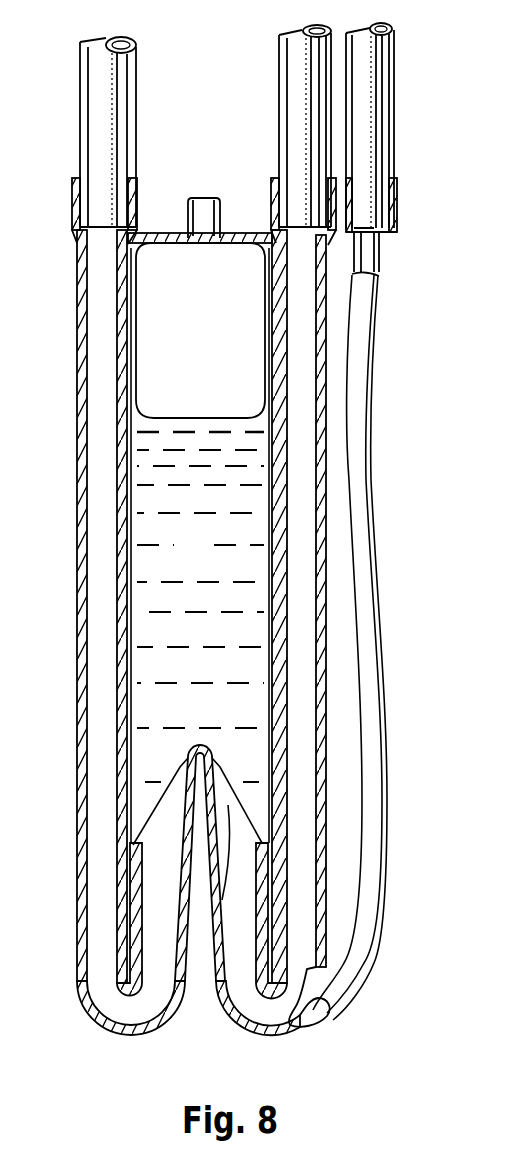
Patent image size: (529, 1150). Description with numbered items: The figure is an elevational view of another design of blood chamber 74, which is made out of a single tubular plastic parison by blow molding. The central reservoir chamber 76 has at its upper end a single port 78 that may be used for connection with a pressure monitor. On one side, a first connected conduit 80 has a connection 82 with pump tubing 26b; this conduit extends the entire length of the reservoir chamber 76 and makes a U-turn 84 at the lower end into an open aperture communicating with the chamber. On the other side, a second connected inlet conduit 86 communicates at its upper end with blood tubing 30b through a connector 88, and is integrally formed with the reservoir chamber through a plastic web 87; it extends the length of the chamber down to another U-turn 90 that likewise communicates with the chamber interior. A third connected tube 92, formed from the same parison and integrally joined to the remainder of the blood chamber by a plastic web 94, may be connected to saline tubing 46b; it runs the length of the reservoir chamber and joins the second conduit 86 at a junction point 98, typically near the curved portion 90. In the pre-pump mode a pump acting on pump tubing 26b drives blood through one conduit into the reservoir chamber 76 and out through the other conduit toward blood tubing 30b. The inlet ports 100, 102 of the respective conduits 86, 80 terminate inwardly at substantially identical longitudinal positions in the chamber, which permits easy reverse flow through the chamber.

The pump tubing 26b is at (98, 98).
The blood tubing 30b is at (298, 86).
The saline tubing 46b is at (366, 48).
The connection 82 is at (77, 200).
The connector 88 is at (281, 193).
The single port 78 is at (203, 213).
The second connected inlet conduit 86 is at (299, 328).
The plastic web 87 is at (267, 664).
The blood chamber (reservoir chamber) 76 is at (181, 561).
The blood chamber 74 is at (78, 488).
The first connected conduit 80 is at (97, 680).
The U-turn 84 is at (107, 1037).
The inlet port 100 is at (196, 930).
The U-turn (curved portion) 90 is at (260, 1040).
The junction point 98 is at (316, 1004).
The inlet port 102 is at (167, 798).
The third connected tube 92 is at (360, 482).
The plastic web 94 is at (339, 605).